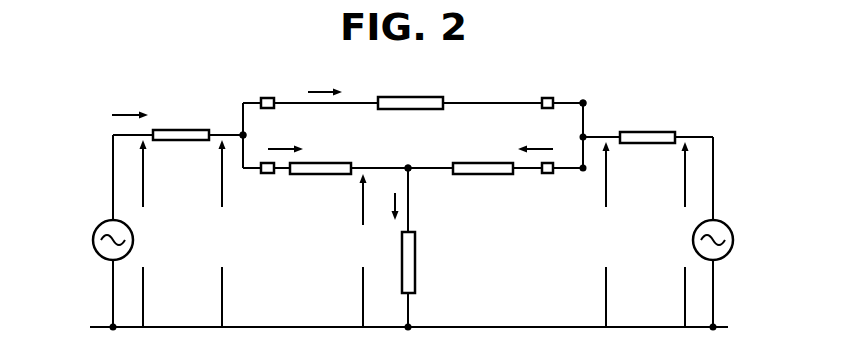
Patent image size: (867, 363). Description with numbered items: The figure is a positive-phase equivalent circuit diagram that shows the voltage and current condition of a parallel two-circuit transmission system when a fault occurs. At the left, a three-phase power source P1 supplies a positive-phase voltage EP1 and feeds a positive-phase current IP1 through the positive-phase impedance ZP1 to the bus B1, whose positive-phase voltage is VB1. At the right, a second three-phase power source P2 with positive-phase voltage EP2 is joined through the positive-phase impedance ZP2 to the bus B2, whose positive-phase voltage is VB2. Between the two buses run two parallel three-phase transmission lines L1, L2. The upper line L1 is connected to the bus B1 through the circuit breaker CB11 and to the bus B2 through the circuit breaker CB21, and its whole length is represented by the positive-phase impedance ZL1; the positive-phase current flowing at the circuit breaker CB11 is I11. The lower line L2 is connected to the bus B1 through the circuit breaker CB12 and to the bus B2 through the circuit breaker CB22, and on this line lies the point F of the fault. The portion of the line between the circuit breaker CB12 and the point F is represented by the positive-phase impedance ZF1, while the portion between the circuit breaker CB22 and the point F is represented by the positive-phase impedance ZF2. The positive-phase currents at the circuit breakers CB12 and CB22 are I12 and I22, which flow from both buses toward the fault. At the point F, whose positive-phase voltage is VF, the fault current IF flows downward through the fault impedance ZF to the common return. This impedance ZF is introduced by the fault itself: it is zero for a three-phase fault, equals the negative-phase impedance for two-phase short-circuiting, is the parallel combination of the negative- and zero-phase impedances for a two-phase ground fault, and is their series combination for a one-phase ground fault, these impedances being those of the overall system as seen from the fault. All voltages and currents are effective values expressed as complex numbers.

The power source P1 is at (92, 240).
The power source P2 is at (733, 240).
The positive-phase voltage at power source P1 EP1 is at (159, 233).
The positive-phase voltage at power source P2 EP2 is at (669, 234).
The positive-phase impedance between bus B1 and power source P1 ZP1 is at (184, 130).
The positive-phase impedance between bus B2 and power source P2 ZP2 is at (652, 132).
The positive-phase current at power source P1 IP1 is at (129, 103).
The bus B1 is at (241, 109).
The bus B2 is at (584, 101).
The positive-phase voltage at bus B1 VB1 is at (219, 233).
The positive-phase voltage at bus B2 VB2 is at (604, 234).
The circuit breaker CB11 is at (268, 98).
The circuit breaker CB21 is at (547, 98).
The circuit breaker CB12 is at (268, 174).
The circuit breaker CB22 is at (547, 174).
The three-phase transmission line L1 is at (485, 100).
The three-phase transmission line L2 is at (436, 167).
The positive-phase impedance of transmission line L1 ZL1 is at (408, 97).
The positive-phase impedance between circuit breaker CB12 and fault point F ZF1 is at (320, 175).
The positive-phase impedance between circuit breaker CB22 and fault point F ZF2 is at (483, 175).
The positive-phase current at circuit breaker CB11 I11 is at (325, 80).
The positive-phase current at circuit breaker CB12 I12 is at (285, 138).
The positive-phase current at circuit breaker CB22 I22 is at (535, 138).
The point of fault F is at (404, 156).
The positive-phase fault current IF is at (384, 206).
The positive-phase voltage at fault point F VF is at (361, 250).
The fault impedance ZF is at (415, 266).